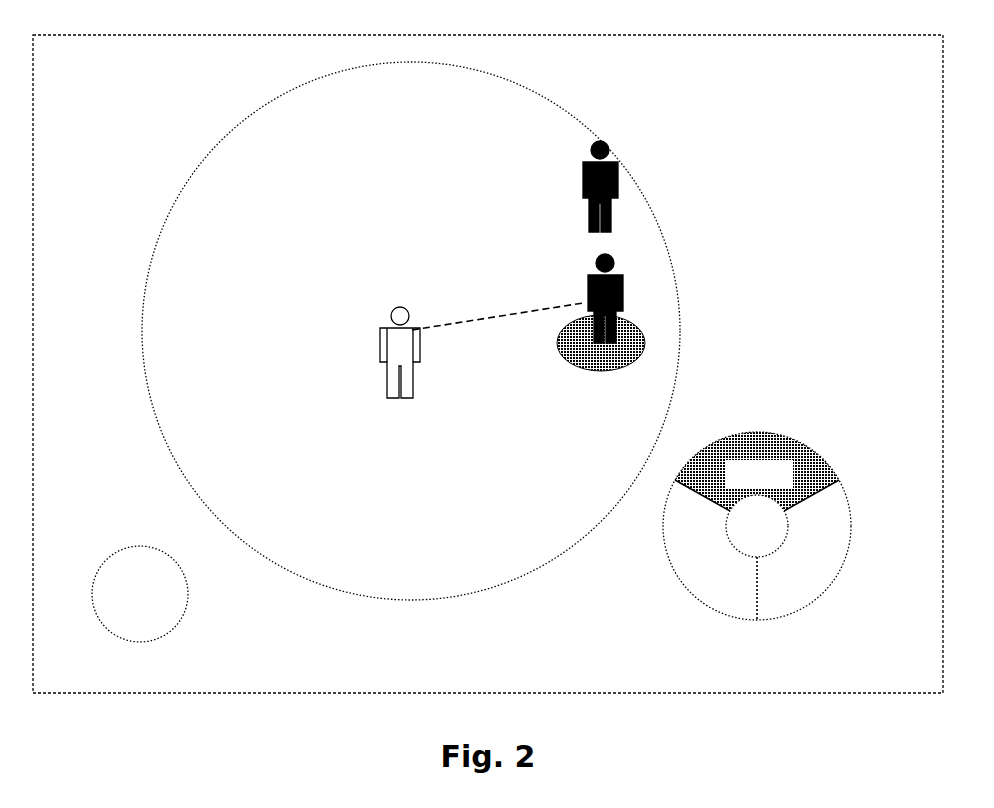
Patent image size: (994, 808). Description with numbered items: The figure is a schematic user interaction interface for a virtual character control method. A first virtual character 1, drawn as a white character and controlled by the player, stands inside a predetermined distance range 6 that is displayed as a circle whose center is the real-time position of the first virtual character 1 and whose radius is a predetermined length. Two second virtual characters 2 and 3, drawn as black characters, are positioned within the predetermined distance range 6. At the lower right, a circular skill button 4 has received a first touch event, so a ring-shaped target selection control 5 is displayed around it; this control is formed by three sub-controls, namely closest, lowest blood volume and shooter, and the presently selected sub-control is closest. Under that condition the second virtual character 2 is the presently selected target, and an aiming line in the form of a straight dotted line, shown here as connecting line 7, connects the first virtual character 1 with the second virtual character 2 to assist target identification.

The first virtual character 1 is at (380, 332).
The second virtual character 2 is at (621, 270).
The second virtual character 3 is at (618, 160).
The skill button 4 is at (792, 455).
The target selection control 5 is at (783, 432).
The predetermined distance range 6 is at (682, 297).
The targeting connection line 7 is at (483, 315).